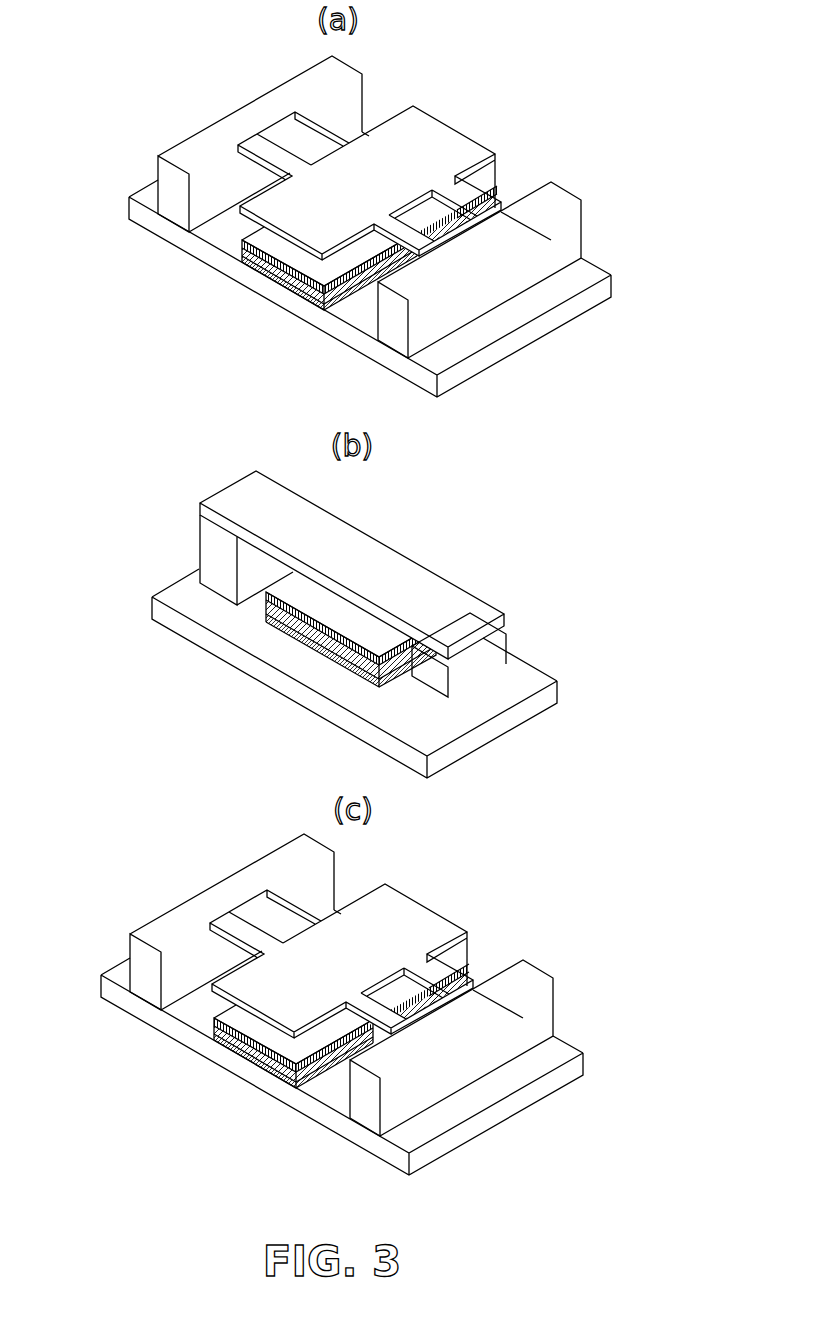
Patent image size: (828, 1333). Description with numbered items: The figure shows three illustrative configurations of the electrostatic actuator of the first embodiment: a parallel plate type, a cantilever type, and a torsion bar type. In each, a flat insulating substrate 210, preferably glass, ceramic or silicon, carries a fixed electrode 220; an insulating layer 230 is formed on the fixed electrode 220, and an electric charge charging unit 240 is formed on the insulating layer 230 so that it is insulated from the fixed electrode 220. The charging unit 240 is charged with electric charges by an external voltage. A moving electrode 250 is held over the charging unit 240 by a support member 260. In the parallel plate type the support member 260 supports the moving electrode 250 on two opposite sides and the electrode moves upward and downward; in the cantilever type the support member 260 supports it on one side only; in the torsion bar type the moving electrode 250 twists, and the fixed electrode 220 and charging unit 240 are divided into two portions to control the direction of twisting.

The insulating substrate 210 is at (410, 387).
The fixed electrode 220 is at (312, 300).
The insulating layer 230 is at (255, 262).
The electric charge charging unit 240 is at (288, 283).
The moving electrode 250 is at (493, 155).
The support member 260 is at (223, 124).